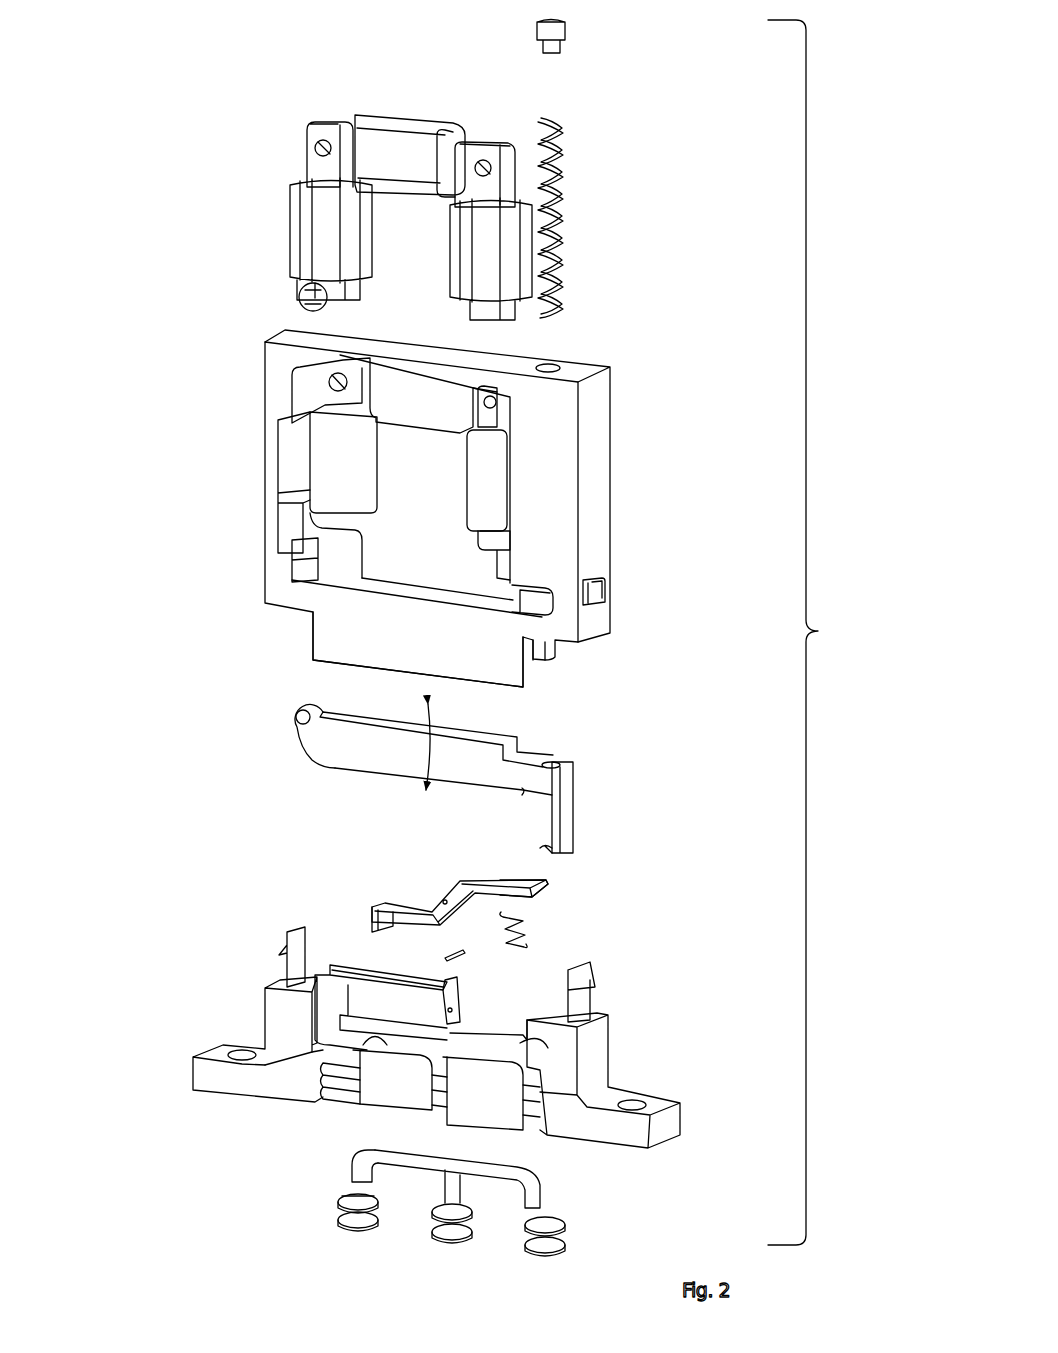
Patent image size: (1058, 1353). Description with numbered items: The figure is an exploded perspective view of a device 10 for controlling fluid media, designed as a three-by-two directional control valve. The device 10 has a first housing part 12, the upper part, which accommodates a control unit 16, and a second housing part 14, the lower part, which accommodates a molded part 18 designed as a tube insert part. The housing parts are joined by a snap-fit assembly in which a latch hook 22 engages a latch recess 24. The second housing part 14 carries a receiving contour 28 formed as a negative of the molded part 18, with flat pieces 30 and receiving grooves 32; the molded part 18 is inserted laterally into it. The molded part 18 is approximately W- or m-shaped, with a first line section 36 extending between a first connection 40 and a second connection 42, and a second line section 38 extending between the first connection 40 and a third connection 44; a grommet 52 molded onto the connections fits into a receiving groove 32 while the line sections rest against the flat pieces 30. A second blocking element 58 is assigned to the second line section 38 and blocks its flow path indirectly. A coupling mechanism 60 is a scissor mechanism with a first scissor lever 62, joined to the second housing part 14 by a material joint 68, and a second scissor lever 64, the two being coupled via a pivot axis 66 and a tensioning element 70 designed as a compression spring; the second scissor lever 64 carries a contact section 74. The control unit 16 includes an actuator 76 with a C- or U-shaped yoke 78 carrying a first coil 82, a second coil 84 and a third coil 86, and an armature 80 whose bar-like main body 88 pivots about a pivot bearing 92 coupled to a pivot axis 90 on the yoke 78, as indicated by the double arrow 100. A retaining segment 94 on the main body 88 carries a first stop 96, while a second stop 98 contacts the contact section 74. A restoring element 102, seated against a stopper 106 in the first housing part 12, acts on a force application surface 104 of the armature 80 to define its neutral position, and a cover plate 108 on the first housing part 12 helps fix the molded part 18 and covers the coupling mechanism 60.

The device for controlling fluid media 10 is at (728, 223).
The first housing part 12 is at (466, 508).
The second housing part 14 is at (400, 1031).
The control unit 16 is at (428, 193).
The molded part 18 is at (467, 1206).
The latch hook 22 is at (284, 955).
The latch recess 24 is at (605, 590).
The receiving contour 28 is at (500, 1057).
The flat piece 30 is at (415, 1048).
The receiving groove 32 is at (345, 1090).
The first line section 36 is at (490, 1170).
The second line section 38 is at (410, 1153).
The first connection 40 is at (448, 1238).
The second connection 42 is at (548, 1250).
The third connection 44 is at (352, 1230).
The grommet 52 is at (352, 1220).
The second blocking element 58 is at (372, 922).
The coupling mechanism 60 is at (517, 901).
The first scissor lever 62 is at (453, 1008).
The second scissor lever 64 is at (412, 906).
The pivot axis 66 is at (468, 955).
The material joint 68 is at (375, 972).
The tensioning element 70 is at (527, 930).
The contact section 74 is at (515, 880).
The actuator 76 is at (394, 136).
The yoke 78 is at (352, 155).
The armature 80 is at (455, 772).
The first coil 82 is at (302, 228).
The second coil 84 is at (413, 128).
The third coil 86 is at (472, 235).
The main body 88 is at (352, 755).
The pivot axis 90 is at (300, 296).
The pivot bearing 92 is at (298, 722).
The retaining segment 94 is at (565, 806).
The first stop 96 is at (553, 846).
The second stop 98 is at (520, 793).
The double arrow 100 is at (428, 730).
The restoring element 102 is at (564, 210).
The force application surface 104 is at (555, 760).
The stopper 106 is at (566, 31).
The cover plate 108 is at (343, 636).